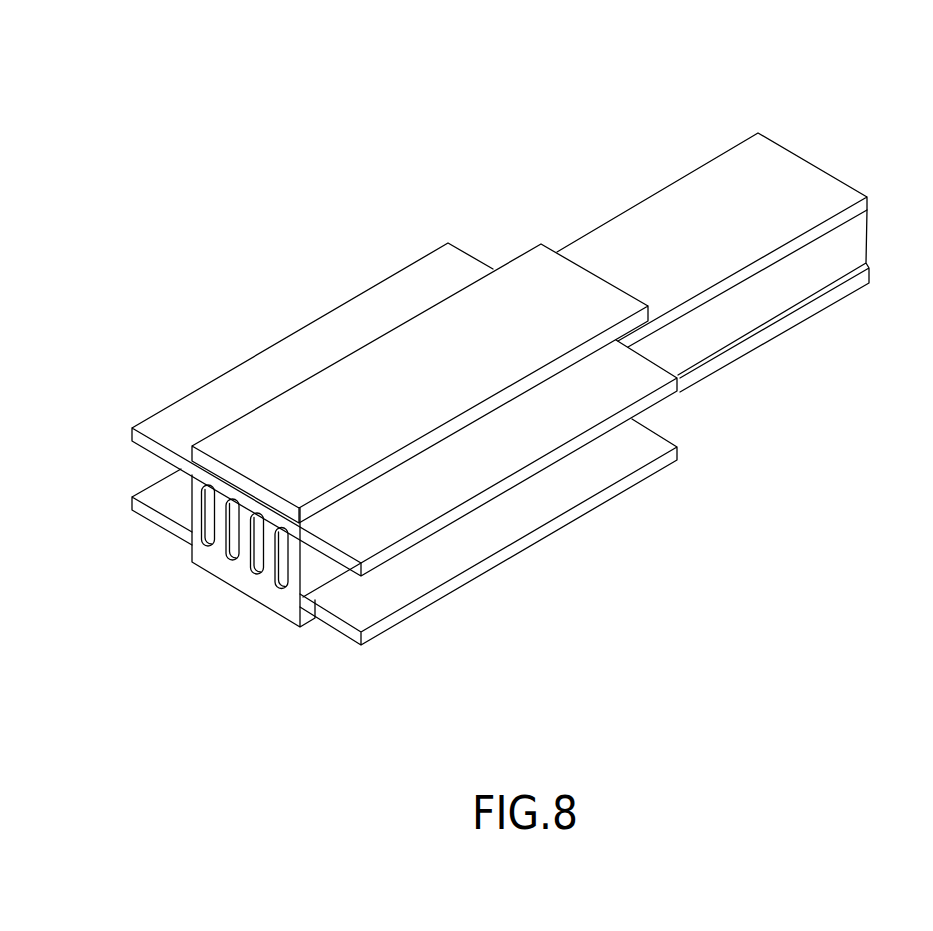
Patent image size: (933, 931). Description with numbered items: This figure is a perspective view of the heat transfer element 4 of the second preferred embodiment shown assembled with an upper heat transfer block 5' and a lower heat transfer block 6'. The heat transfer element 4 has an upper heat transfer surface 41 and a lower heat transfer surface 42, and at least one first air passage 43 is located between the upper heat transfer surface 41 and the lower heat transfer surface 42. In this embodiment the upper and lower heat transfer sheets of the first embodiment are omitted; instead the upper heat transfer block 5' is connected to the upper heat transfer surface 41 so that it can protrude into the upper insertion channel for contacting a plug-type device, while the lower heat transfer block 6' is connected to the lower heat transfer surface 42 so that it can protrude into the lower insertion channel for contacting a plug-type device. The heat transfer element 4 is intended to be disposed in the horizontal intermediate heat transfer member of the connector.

The heat transfer element 4 is at (466, 345).
The upper heat transfer surface 41 is at (702, 190).
The lower heat transfer surface 42 is at (750, 352).
The first air passage 43 is at (223, 518).
The upper heat transfer block 5' is at (420, 364).
The lower heat transfer block 6' is at (208, 565).